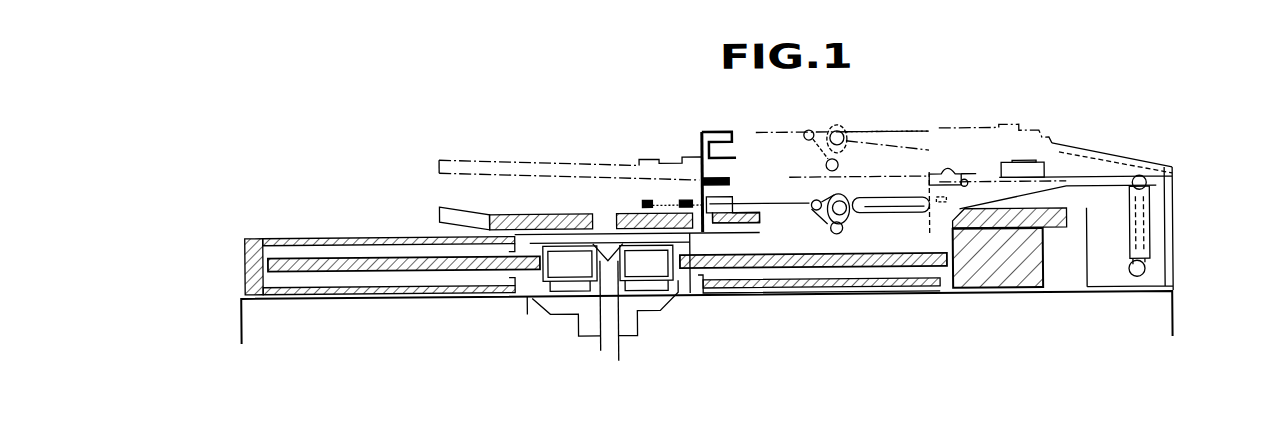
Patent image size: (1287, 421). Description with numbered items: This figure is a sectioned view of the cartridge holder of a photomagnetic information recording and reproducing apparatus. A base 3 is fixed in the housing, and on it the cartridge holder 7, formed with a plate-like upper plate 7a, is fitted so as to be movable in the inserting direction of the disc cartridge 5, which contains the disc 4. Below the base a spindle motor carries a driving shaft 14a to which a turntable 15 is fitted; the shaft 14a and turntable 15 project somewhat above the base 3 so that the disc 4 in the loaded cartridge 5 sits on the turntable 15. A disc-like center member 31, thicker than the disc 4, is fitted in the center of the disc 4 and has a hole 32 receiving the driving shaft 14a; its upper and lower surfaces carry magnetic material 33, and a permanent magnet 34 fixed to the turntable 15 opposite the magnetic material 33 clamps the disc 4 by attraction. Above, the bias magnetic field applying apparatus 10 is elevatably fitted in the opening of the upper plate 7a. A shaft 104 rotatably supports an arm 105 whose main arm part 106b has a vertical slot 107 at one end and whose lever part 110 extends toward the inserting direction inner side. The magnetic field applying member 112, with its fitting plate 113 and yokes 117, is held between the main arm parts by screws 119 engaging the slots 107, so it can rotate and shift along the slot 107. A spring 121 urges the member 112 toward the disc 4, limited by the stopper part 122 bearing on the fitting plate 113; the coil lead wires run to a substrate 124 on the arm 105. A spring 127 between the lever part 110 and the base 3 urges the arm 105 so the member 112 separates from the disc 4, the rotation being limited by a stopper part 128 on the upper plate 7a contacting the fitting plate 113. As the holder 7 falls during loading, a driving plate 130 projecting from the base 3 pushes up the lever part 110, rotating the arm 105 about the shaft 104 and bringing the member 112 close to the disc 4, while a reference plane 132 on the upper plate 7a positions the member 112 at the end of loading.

The base 3 is at (1173, 294).
The disc 4 is at (310, 257).
The disc cartridge 5 is at (245, 259).
The cartridge holder 7 is at (505, 204).
The upper plate 7a is at (557, 209).
The bias magnetic field applying apparatus 10 is at (1033, 98).
The driving shaft 14a is at (598, 346).
The turntable 15 is at (633, 337).
The center member 31 is at (593, 219).
The hole 32 is at (617, 219).
The magnetic material 33 is at (635, 340).
The permanent magnet 34 is at (550, 296).
The shaft 104 is at (970, 175).
The arm 105 is at (937, 290).
The main arm part 106b is at (903, 230).
The slot 107 is at (855, 215).
The lever part 110 is at (1117, 164).
The magnetic field applying member 112 is at (778, 234).
The fitting plate 113 is at (780, 203).
The yoke 117 is at (750, 293).
The screw 119 is at (836, 236).
The spring 121 is at (805, 210).
The stopper part 122 is at (930, 177).
The substrate 124 is at (1037, 180).
The spring 127 is at (1160, 242).
The stopper part 128 is at (703, 178).
The driving plate 130 is at (1170, 184).
The reference plane 132 is at (738, 200).